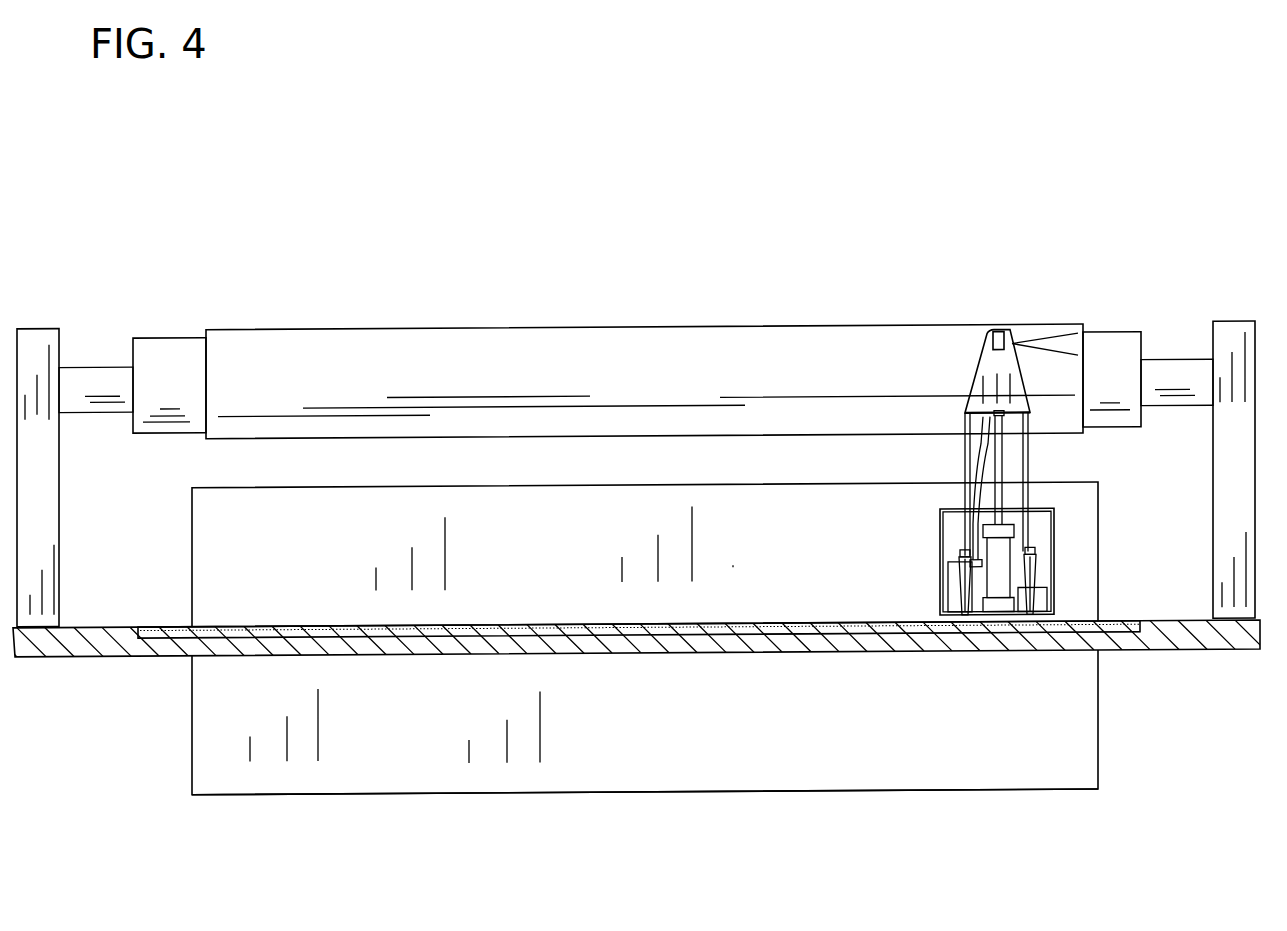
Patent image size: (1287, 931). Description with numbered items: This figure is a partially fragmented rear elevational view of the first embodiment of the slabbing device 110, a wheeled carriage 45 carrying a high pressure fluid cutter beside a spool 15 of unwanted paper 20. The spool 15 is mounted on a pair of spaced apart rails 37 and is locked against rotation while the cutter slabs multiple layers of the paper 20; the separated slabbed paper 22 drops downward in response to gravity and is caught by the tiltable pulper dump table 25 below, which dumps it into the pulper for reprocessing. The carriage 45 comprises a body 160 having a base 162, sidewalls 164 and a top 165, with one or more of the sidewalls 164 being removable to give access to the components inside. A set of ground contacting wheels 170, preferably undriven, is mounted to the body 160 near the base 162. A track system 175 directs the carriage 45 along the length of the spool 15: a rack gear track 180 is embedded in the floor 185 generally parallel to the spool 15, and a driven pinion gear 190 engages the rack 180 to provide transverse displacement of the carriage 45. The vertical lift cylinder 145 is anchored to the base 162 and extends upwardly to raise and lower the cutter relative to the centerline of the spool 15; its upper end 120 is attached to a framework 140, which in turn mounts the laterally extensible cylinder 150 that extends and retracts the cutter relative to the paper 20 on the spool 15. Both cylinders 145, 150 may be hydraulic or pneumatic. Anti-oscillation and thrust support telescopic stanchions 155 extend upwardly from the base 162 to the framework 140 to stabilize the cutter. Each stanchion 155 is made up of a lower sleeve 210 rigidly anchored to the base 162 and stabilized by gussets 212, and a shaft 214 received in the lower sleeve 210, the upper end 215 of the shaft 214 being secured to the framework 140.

The spool 15 is at (163, 353).
The unwanted paper 20 is at (385, 374).
The slabbed paper 22 is at (1050, 342).
The pulper dump table 25 is at (905, 801).
The rails 37 is at (47, 437).
The carriage 45 is at (918, 544).
The first embodiment device 110 is at (993, 314).
The upper end of vertical cylinder 120 is at (1002, 431).
The framework 140 is at (970, 396).
The vertical lift cylinder 145 is at (1010, 491).
The laterally extensible cylinder 150 is at (1005, 334).
The telescopic stanchions 155 is at (957, 495).
The body 160 is at (937, 601).
The base 162 is at (996, 619).
The sidewalls 164 is at (1053, 589).
The top 165 is at (1045, 504).
The ground contacting wheels 170 is at (952, 620).
The track system 175 is at (813, 646).
The rack gear track 180 is at (602, 636).
The floor 185 is at (43, 643).
The driven pinion gear 190 is at (1029, 620).
The lower sleeve 210 is at (968, 622).
The gussets 212 is at (958, 620).
The shaft 214 is at (968, 461).
The upper end of shaft 215 is at (965, 426).